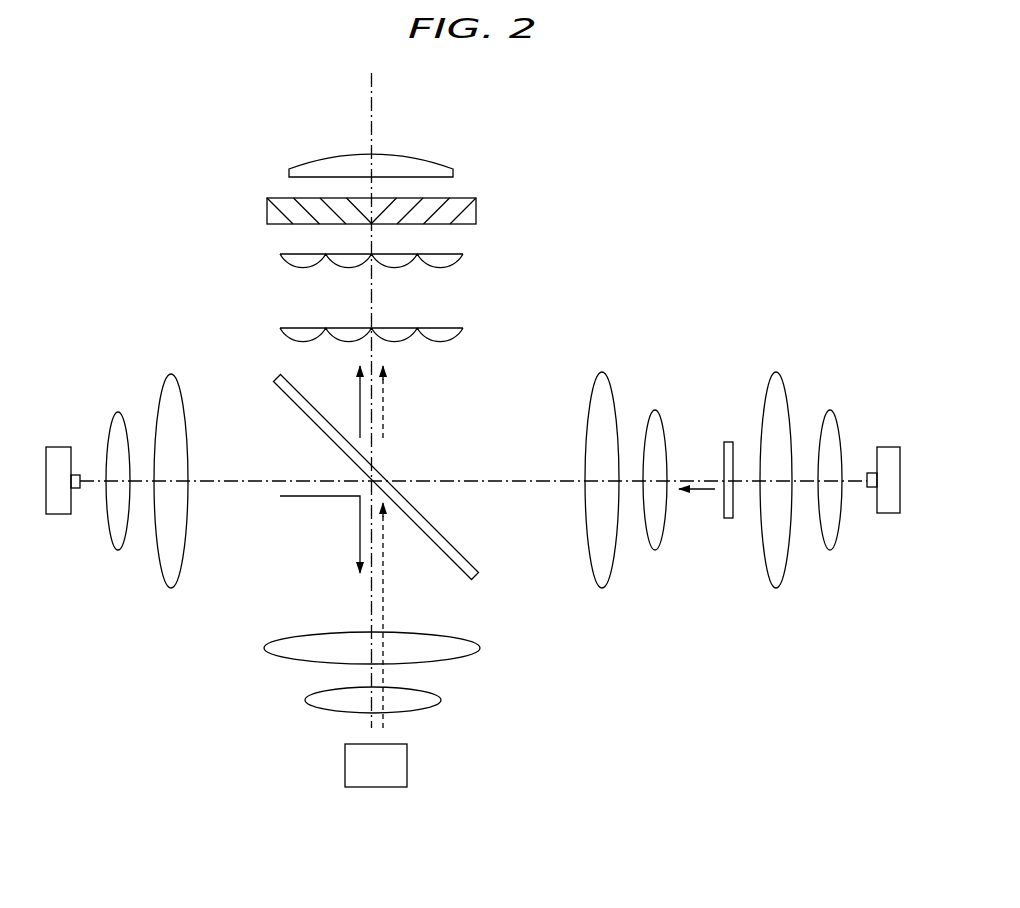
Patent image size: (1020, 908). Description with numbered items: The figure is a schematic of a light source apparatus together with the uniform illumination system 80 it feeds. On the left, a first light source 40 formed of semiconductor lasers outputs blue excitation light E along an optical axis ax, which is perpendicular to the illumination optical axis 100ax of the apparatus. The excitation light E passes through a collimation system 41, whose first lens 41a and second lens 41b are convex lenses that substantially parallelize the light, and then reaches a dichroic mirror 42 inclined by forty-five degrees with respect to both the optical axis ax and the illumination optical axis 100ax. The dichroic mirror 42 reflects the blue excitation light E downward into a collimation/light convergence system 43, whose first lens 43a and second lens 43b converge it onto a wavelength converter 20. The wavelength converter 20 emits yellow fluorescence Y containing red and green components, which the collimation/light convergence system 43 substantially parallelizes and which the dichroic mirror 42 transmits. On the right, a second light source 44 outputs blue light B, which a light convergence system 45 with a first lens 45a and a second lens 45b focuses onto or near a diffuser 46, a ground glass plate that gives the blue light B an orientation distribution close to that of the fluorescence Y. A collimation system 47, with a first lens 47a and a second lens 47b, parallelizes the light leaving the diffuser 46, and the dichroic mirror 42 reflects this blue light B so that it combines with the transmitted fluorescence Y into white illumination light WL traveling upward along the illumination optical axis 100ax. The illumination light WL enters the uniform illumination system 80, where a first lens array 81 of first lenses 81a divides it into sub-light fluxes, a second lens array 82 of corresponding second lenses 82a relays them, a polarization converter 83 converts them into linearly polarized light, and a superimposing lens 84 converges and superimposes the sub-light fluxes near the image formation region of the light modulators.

The illumination optical axis 100ax is at (371, 116).
The optical axis ax is at (244, 483).
The uniform illumination system 80 is at (406, 243).
The superimposing lens 84 is at (446, 163).
The polarization converter 83 is at (454, 198).
The second lens array 82 is at (381, 261).
The second lens 82a is at (292, 264).
The first lens array 81 is at (381, 325).
The first lens 81a is at (292, 339).
The first light source 40 is at (83, 443).
The collimation system 41 is at (135, 423).
The first lens 41a is at (122, 414).
The second lens 41b is at (173, 375).
The dichroic mirror 42 is at (458, 550).
The collimation system 47 is at (648, 422).
The first lens 47a is at (660, 412).
The second lens 47b is at (612, 384).
The diffuser 46 is at (726, 443).
The light convergence system 45 is at (822, 422).
The first lens 45a is at (835, 412).
The second lens 45b is at (787, 384).
The second light source 44 is at (861, 450).
The collimation/light convergence system 43 is at (308, 681).
The first lens 43a is at (317, 705).
The second lens 43b is at (278, 657).
The wavelength converter 20 is at (425, 766).
The blue light B is at (360, 394).
The fluorescence Y is at (383, 427).
The excitation light E is at (320, 534).
The illumination light WL is at (443, 365).